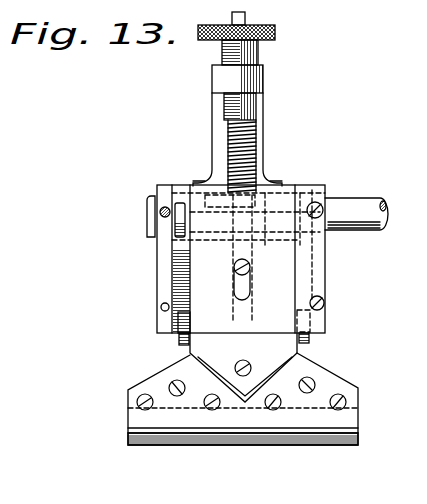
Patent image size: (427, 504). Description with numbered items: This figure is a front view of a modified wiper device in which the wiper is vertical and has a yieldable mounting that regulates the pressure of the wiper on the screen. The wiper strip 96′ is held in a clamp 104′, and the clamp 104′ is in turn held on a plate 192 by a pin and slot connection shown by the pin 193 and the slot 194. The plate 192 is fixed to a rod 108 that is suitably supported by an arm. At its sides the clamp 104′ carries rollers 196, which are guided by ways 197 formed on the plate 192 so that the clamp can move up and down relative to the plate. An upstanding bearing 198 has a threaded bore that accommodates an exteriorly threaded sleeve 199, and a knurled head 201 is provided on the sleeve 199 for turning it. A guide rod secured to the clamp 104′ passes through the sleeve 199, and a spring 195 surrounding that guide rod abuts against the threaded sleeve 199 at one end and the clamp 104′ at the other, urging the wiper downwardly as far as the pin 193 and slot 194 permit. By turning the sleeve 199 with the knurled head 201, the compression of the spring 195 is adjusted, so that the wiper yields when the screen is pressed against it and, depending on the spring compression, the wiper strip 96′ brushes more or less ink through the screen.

The knurled head 201 is at (276, 30).
The exteriorly threaded sleeve 199 is at (259, 55).
The upstanding bearing 198 is at (257, 122).
The spring 195 is at (258, 166).
The plate 192 is at (175, 190).
The ways 197 is at (326, 272).
The rod 108 is at (352, 200).
The pin 193 is at (250, 267).
The slot 194 is at (251, 290).
The rollers 196 is at (178, 345).
The clamp 104′ is at (130, 393).
The wiper strip 96′ is at (359, 431).